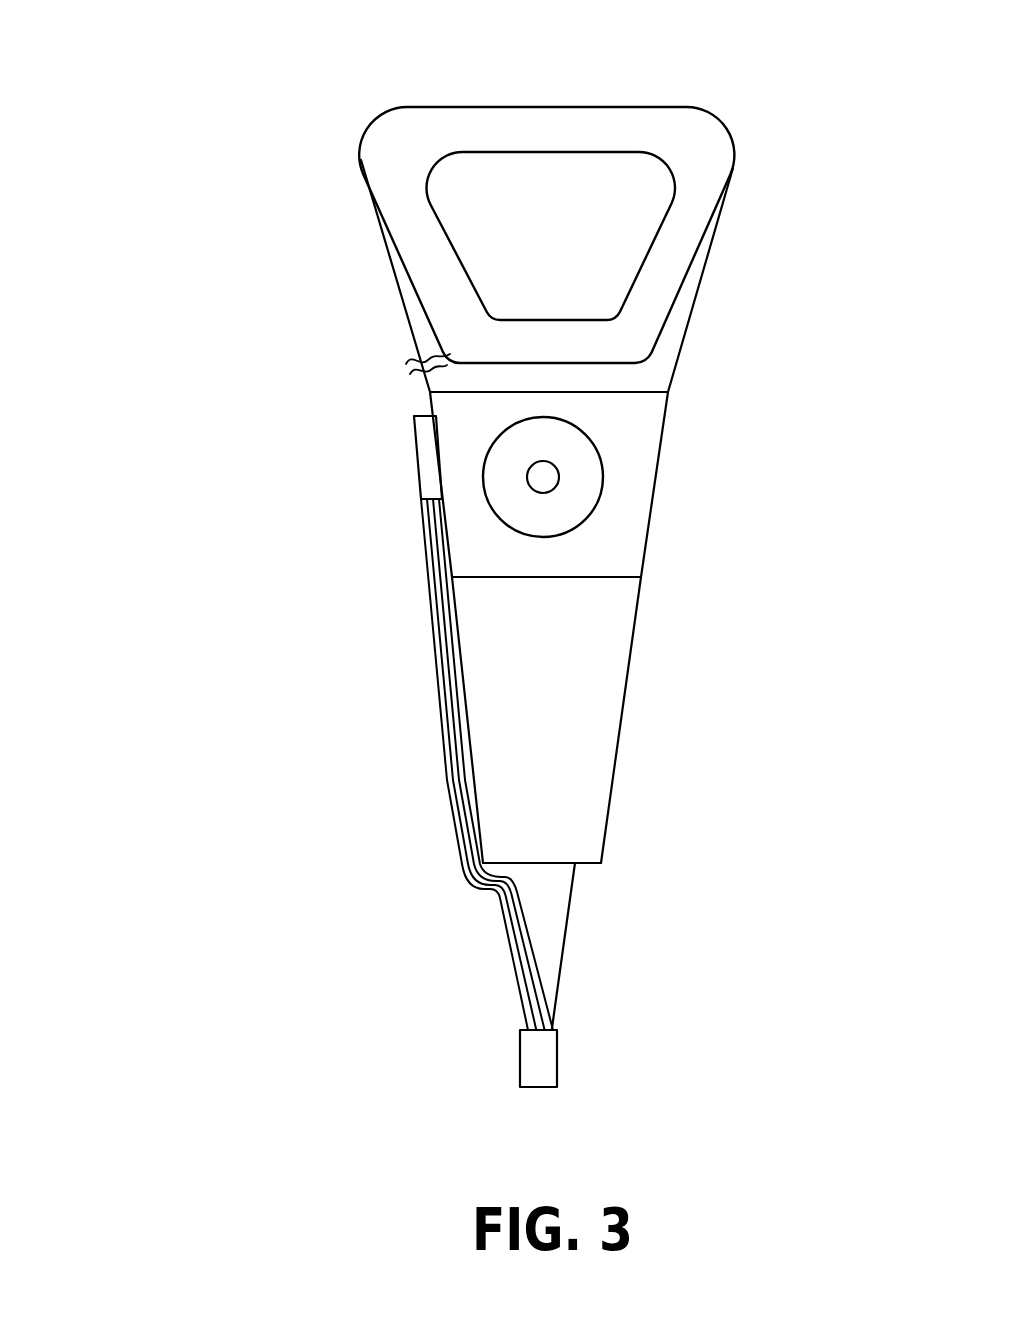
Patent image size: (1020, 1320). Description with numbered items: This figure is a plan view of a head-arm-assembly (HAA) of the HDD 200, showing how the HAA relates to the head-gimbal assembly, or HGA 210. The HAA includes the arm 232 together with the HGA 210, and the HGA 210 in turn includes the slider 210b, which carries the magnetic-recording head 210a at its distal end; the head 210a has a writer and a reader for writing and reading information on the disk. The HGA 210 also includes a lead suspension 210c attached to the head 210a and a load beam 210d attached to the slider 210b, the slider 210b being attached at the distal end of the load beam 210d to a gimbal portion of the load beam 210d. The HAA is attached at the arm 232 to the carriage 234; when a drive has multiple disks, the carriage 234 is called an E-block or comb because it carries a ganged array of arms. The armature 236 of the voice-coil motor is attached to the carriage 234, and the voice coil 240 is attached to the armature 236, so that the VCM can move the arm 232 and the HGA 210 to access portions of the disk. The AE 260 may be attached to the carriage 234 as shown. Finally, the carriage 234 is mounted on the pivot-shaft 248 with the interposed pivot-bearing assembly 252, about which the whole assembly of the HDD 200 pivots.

The HDD 200 is at (150, 92).
The voice coil 240 is at (425, 262).
The armature 236 is at (427, 335).
The carriage 234 is at (610, 538).
The pivot-bearing assembly 252 is at (585, 488).
The pivot-shaft 248 is at (544, 476).
The arm 232 is at (540, 667).
The AE 260 is at (430, 467).
The HGA 210 is at (512, 1087).
The magnetic-recording head 210a is at (527, 1077).
The slider 210b is at (497, 1058).
The lead suspension 210c is at (517, 948).
The load beam 210d is at (540, 908).